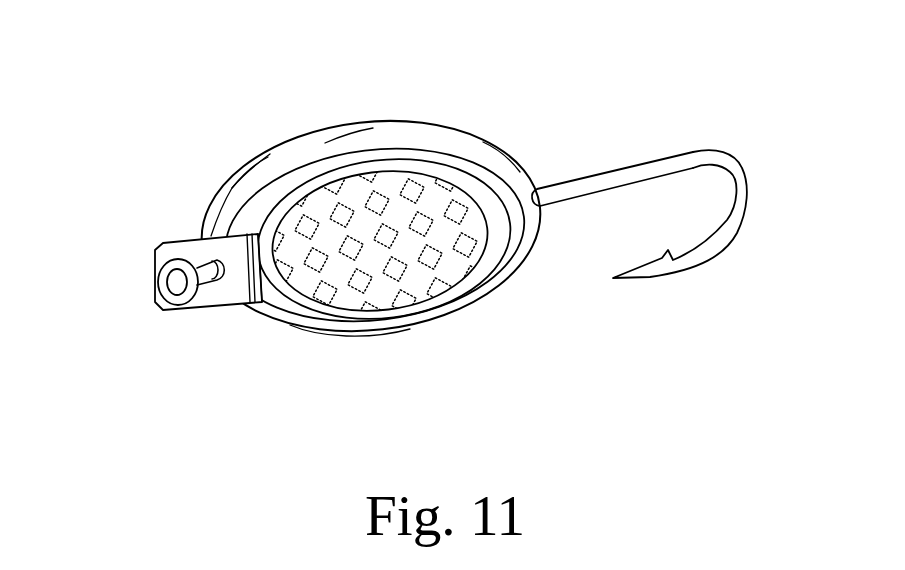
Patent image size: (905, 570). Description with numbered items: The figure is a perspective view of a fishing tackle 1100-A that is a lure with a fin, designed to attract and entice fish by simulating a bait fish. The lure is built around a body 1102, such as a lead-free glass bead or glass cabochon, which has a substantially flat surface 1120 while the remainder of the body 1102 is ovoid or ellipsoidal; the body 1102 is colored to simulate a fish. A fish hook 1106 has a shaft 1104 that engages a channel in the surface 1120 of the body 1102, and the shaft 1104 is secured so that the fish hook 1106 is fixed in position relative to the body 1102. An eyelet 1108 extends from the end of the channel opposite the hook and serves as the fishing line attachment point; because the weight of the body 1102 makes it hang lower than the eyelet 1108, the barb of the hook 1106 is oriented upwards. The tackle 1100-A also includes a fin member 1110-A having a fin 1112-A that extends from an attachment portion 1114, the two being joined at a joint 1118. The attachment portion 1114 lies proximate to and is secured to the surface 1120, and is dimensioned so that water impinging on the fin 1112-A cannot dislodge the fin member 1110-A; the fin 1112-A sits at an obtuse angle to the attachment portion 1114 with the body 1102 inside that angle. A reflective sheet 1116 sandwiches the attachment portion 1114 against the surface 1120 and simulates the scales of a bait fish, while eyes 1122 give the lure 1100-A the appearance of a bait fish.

The tackle 1100-A is at (174, 90).
The body 1102 is at (320, 337).
The shaft 1104 is at (615, 168).
The fish hook 1106 is at (747, 185).
The eyelet 1108 is at (187, 308).
The fin member 1110-A is at (407, 317).
The fin 1112-A is at (240, 303).
The attachment portion 1114 is at (452, 303).
The reflective sheet 1116 is at (488, 228).
The joint 1118 is at (243, 228).
The surface 1120 is at (412, 150).
The eyes 1122 is at (250, 164).